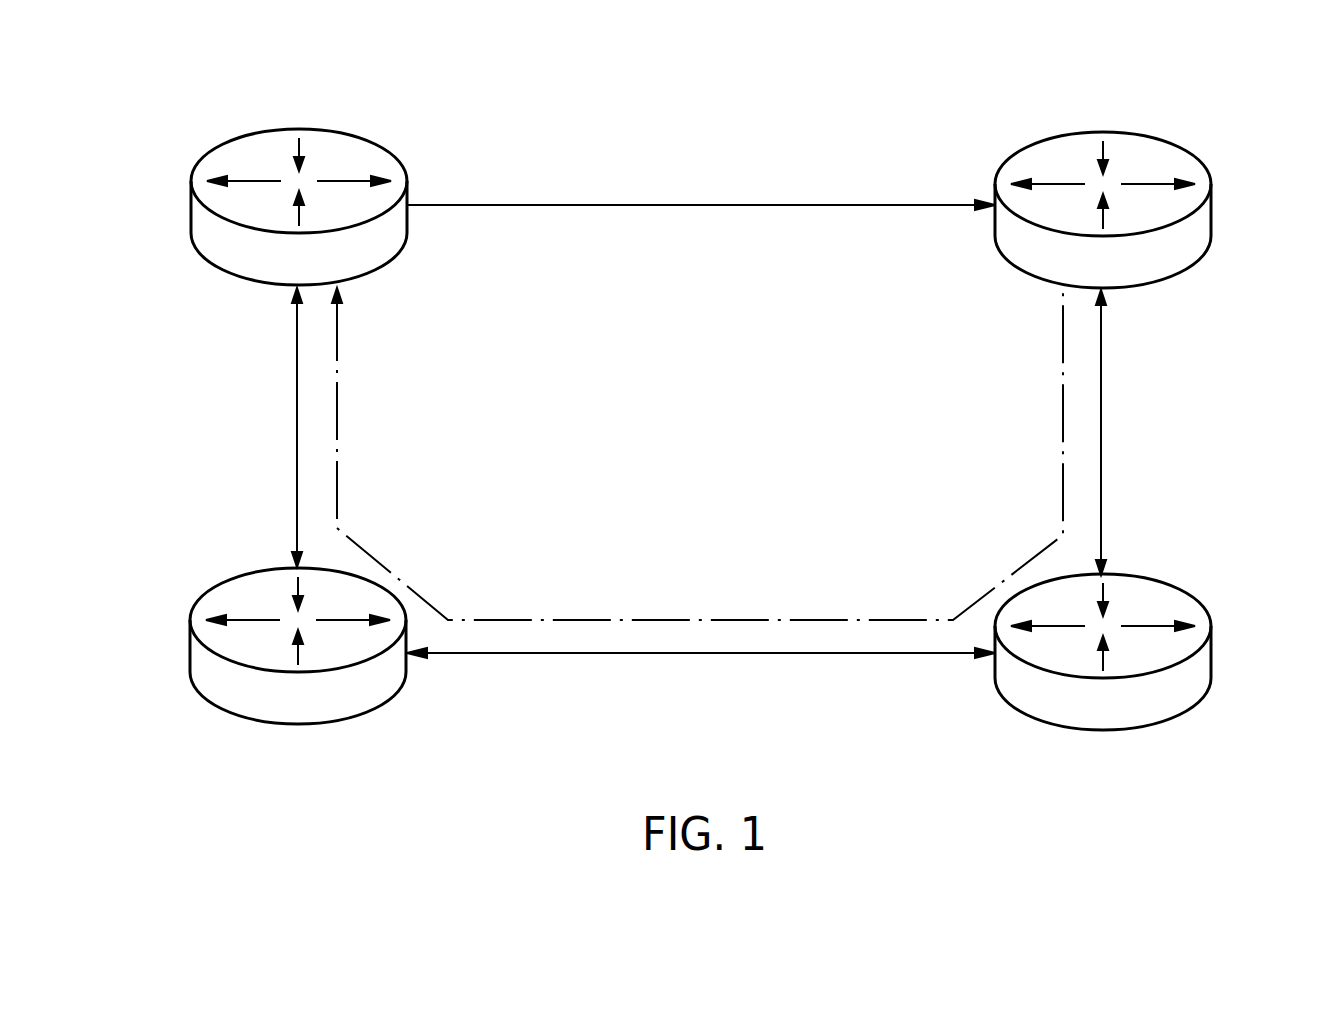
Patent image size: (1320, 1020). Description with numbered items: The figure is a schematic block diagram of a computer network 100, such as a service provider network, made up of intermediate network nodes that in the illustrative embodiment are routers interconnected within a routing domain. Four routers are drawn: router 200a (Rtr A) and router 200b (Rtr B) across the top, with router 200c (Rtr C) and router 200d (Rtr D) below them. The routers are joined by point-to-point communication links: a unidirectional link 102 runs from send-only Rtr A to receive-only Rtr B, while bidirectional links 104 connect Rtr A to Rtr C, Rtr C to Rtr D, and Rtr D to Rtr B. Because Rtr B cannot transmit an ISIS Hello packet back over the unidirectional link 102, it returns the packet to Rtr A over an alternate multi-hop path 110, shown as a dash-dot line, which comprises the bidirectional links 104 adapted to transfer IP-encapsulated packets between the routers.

The computer network 100 is at (122, 128).
The unidirectional link 102 is at (694, 205).
The bidirectional links 104 is at (297, 425).
The multi-hop path 110 is at (500, 618).
The router 200a is at (192, 213).
The router 200b is at (1211, 215).
The router 200c is at (190, 646).
The router 200d is at (1211, 650).